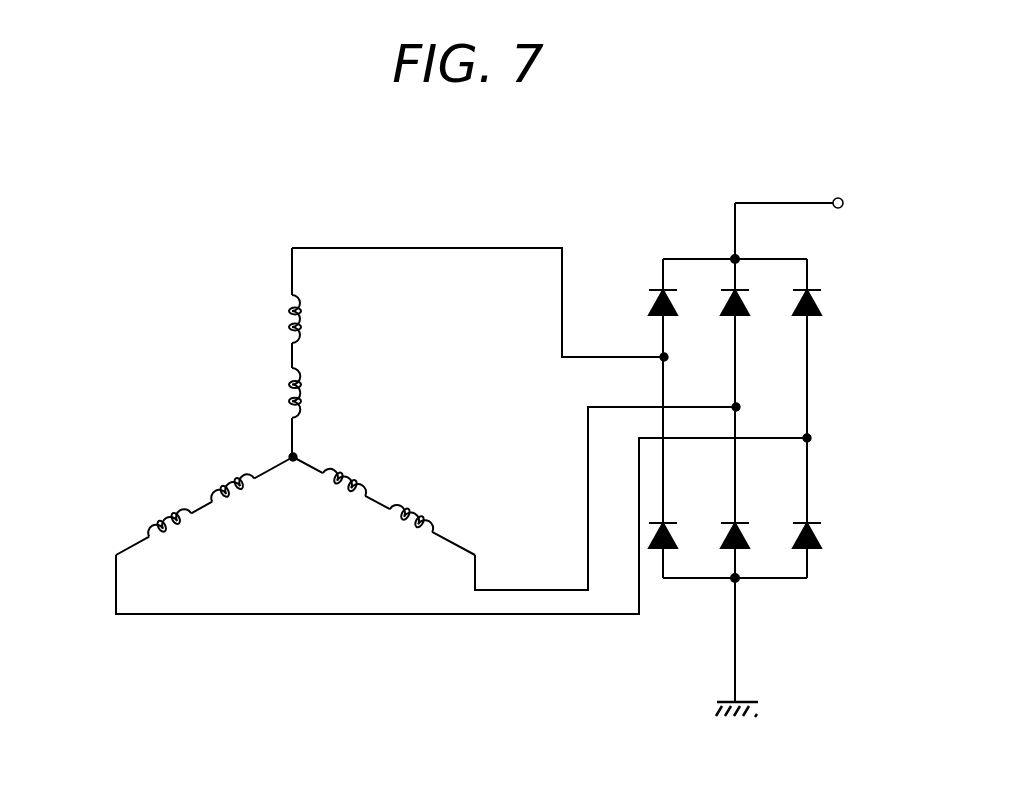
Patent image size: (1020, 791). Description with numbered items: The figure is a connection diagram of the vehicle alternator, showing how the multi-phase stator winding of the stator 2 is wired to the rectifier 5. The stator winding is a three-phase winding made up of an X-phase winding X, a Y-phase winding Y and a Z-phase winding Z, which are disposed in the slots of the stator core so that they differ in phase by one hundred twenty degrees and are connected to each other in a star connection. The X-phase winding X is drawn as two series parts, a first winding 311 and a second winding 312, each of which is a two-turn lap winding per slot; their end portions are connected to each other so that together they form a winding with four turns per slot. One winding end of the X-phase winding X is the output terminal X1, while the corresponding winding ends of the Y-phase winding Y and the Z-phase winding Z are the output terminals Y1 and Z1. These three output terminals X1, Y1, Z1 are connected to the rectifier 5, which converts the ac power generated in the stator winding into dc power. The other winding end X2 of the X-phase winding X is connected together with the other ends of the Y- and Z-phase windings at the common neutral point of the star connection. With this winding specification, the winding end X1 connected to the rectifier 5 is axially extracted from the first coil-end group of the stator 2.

The stator 2 is at (439, 232).
The X-phase winding X is at (248, 302).
The Y-phase winding Y is at (198, 458).
The Z-phase winding Z is at (410, 477).
The first winding 311 is at (313, 320).
The second winding 312 is at (317, 392).
The output terminal of the X-phase winding X1 is at (664, 357).
The output terminal of the Y-phase winding Y1 is at (807, 438).
The output terminal of the Z-phase winding Z1 is at (736, 407).
The winding end of the X-phase winding X2 is at (295, 460).
The rectifier 5 is at (820, 300).